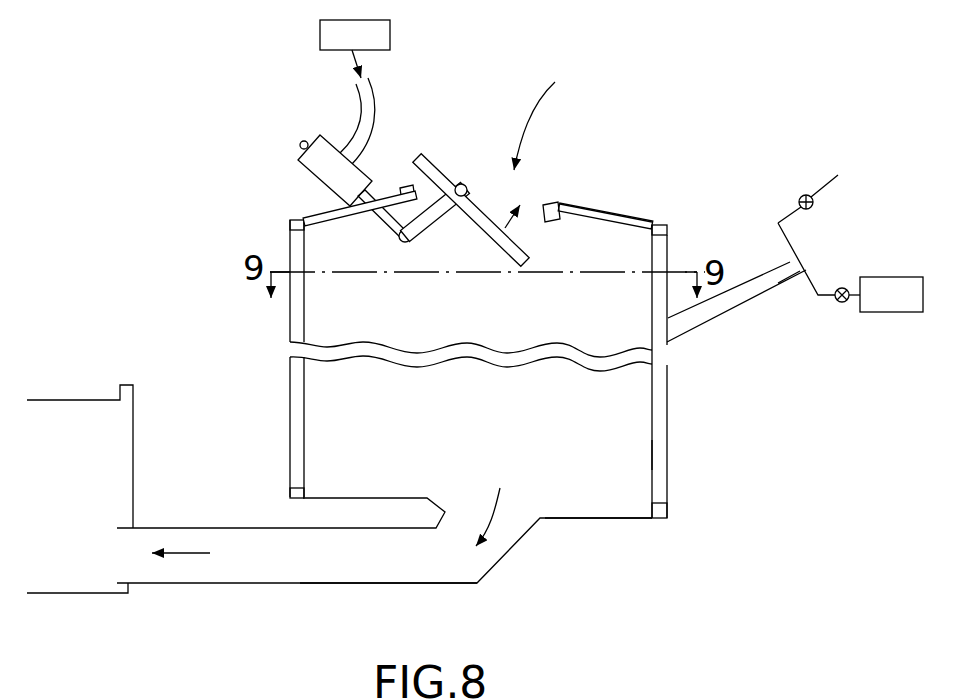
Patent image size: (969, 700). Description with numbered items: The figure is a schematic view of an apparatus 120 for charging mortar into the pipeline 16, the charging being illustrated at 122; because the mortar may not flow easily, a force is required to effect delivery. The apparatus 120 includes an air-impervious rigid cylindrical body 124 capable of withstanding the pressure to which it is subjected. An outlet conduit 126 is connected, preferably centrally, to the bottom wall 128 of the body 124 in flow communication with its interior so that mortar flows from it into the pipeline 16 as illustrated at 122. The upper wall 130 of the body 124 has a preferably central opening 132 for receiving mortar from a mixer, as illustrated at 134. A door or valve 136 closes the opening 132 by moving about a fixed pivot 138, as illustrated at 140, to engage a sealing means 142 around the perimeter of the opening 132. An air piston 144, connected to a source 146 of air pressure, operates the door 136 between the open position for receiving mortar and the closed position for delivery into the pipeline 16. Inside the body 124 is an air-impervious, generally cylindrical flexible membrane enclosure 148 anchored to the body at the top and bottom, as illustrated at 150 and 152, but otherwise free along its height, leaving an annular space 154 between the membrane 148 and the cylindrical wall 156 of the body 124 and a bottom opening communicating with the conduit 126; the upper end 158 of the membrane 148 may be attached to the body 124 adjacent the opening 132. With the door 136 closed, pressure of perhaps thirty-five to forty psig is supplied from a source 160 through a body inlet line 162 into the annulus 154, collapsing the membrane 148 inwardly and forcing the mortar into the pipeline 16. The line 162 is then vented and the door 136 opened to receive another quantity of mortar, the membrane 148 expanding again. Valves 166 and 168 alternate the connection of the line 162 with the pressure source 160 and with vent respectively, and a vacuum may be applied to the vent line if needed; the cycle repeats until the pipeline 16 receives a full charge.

The pipeline 16 is at (47, 400).
The apparatus for charging mortar 120 is at (486, 315).
The charging of mortar into the pipeline 122 is at (190, 556).
The cylindrical body 124 is at (668, 412).
The outlet conduit 126 is at (453, 587).
The bottom wall 128 is at (622, 520).
The upper wall 130 is at (640, 210).
The opening 132 is at (543, 202).
The receiving of mortar 134 is at (532, 122).
The door or valve 136 is at (482, 235).
The fixed pivot 138 is at (462, 184).
The movement of the door 140 is at (423, 198).
The sealing means 142 is at (404, 185).
The air piston 144 is at (302, 165).
The source of air pressure 146 is at (390, 36).
The flexible membrane enclosure 148 is at (655, 453).
The top anchoring 150 is at (669, 234).
The bottom anchoring 152 is at (653, 506).
The annular space 154 is at (293, 430).
The cylindrical wall 156 is at (668, 378).
The upper end of the membrane 158 is at (566, 207).
The pressure source 160 is at (896, 312).
The body inlet line 162 is at (772, 292).
The valve 166 is at (846, 289).
The valve 168 is at (814, 205).